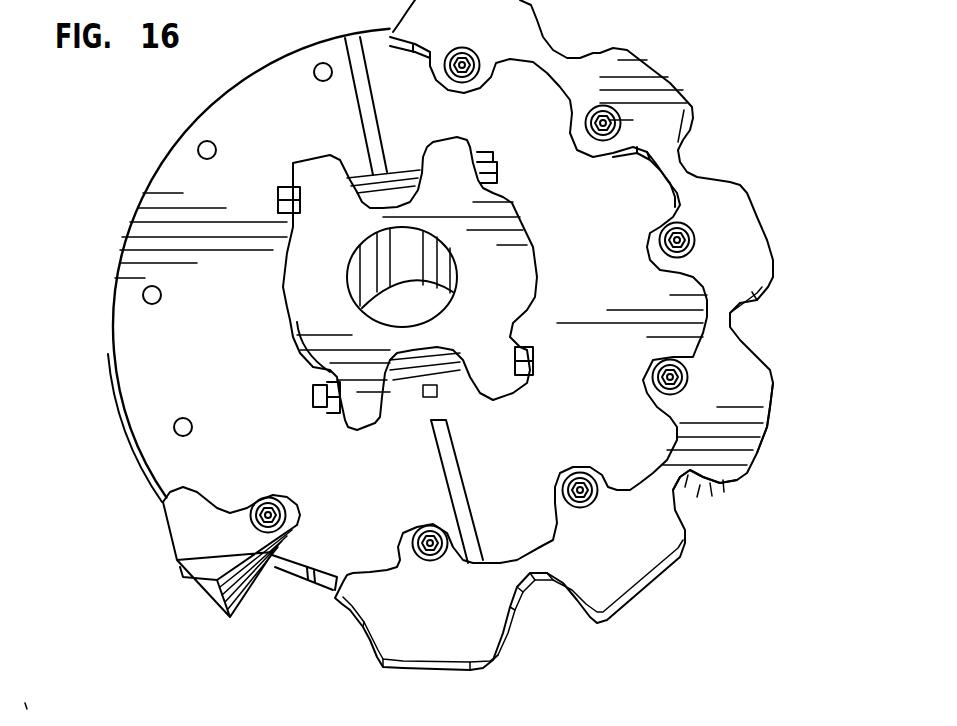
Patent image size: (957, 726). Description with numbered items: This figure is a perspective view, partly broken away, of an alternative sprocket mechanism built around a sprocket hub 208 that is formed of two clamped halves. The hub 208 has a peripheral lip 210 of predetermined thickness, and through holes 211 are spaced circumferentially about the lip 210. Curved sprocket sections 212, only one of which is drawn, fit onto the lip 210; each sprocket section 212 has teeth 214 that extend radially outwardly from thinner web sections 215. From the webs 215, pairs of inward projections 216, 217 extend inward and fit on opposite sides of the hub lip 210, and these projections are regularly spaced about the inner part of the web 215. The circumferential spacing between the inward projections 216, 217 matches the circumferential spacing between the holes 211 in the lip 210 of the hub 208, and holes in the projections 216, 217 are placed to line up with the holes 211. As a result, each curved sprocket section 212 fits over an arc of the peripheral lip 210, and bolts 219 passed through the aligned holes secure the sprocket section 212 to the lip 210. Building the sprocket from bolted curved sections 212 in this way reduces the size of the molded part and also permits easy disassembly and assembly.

The sprocket hub 208 is at (237, 362).
The lip 210 is at (323, 580).
The through holes 211 is at (143, 290).
The curved sprocket section 212 is at (707, 373).
The teeth 214 is at (763, 433).
The web section 215 is at (697, 473).
The inward projection 216 is at (297, 525).
The inward projection 217 is at (278, 582).
The bolts 219 is at (683, 227).